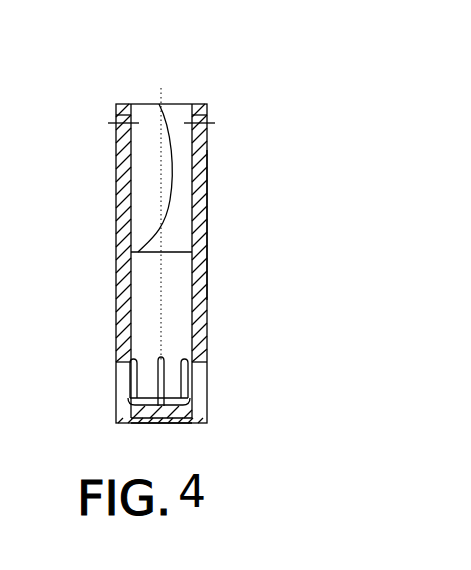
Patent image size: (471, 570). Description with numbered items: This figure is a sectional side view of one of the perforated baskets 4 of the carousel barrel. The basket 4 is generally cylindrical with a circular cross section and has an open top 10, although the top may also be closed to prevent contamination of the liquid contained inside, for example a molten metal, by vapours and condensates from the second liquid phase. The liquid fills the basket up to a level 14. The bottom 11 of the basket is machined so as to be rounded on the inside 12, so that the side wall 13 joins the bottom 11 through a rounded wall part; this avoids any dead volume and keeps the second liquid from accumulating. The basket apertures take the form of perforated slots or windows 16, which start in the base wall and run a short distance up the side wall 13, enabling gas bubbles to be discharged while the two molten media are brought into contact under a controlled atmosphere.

The perforated basket 4 is at (221, 275).
The open top 10 is at (183, 104).
The bottom 11 is at (158, 423).
The rounded inside 12 is at (201, 406).
The side wall 13 is at (207, 212).
The level 14 is at (159, 104).
The windows 16 is at (146, 375).